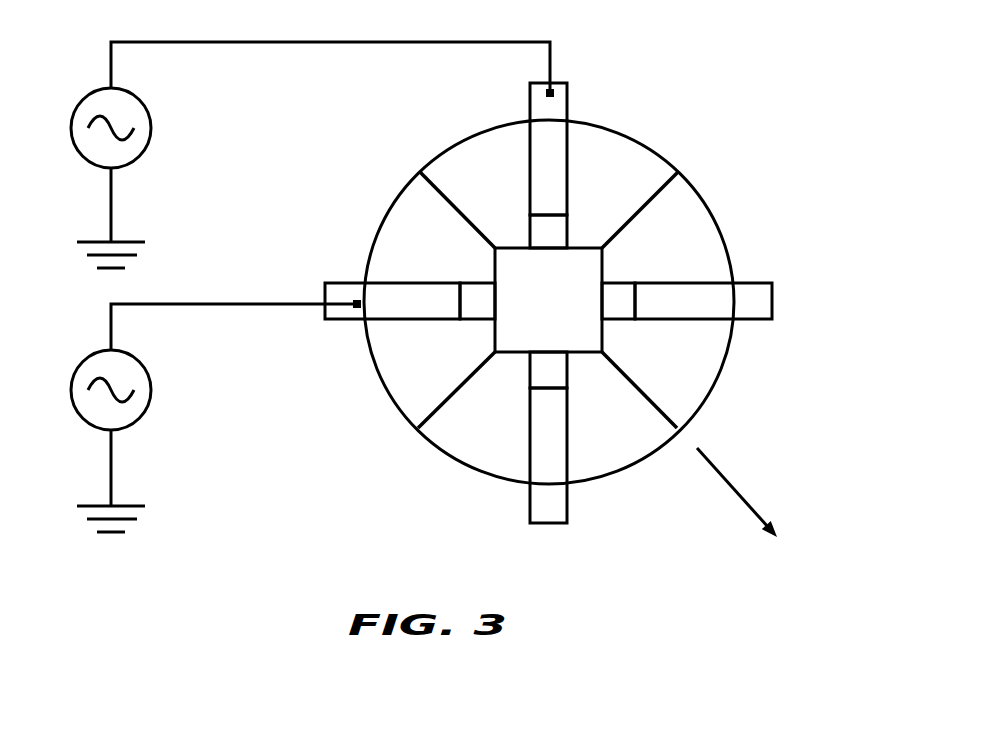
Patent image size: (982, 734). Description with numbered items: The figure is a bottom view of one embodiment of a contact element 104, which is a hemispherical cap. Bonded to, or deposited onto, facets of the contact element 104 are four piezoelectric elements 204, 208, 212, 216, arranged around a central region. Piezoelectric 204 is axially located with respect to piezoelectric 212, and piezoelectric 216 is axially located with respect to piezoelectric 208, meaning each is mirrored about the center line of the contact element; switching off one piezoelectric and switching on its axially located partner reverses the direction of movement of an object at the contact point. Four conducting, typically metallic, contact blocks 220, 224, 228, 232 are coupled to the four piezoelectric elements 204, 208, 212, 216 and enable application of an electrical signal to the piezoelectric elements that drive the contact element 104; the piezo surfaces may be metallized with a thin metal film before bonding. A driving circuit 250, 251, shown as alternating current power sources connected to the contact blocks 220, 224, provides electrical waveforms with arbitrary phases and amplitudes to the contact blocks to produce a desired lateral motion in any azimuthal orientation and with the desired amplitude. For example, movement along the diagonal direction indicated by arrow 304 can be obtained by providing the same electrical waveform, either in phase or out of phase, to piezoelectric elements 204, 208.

The contact element 104 is at (722, 175).
The piezoelectric element 204 is at (478, 295).
The piezoelectric element 208 is at (558, 233).
The piezoelectric element 212 is at (620, 297).
The piezoelectric element 216 is at (557, 370).
The contact block 220 is at (352, 288).
The contact block 224 is at (558, 110).
The contact block 228 is at (703, 310).
The contact block 232 is at (543, 487).
The driving circuit 250 is at (142, 419).
The driving circuit 251 is at (142, 157).
The arrow 304 is at (740, 484).